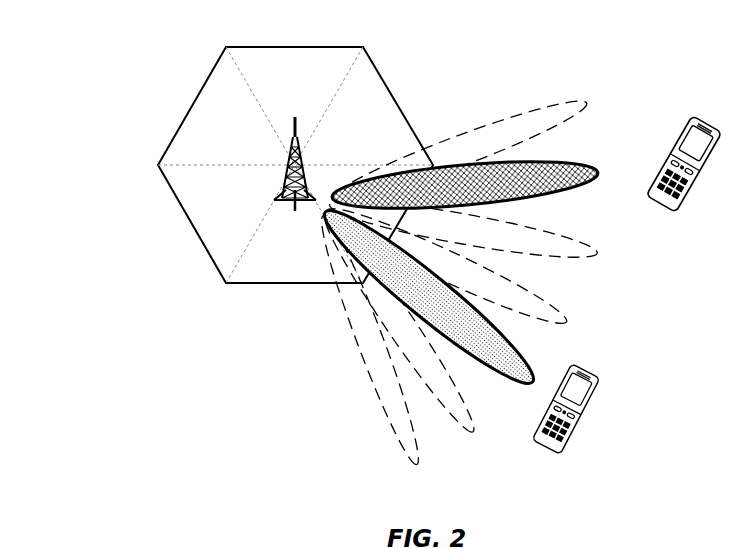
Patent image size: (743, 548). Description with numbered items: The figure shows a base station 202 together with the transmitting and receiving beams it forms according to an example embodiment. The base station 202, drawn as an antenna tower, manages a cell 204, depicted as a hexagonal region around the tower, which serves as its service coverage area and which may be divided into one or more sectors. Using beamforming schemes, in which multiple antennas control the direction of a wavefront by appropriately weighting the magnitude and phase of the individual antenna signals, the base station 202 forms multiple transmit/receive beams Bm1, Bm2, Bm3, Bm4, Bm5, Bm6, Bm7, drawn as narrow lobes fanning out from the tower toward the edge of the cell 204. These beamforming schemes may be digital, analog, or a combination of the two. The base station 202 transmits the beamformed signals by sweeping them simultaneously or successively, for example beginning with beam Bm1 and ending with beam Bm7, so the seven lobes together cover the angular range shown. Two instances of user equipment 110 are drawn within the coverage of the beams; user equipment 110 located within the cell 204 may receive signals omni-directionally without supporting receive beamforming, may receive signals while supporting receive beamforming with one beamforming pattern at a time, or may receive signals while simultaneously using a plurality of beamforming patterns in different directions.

The cell 204 is at (266, 165).
The base station 202 is at (295, 172).
The user equipment 110 is at (621, 296).
The beam BM1 Bm1 is at (596, 102).
The beam BM2 Bm2 is at (606, 173).
The beam BM3 Bm3 is at (605, 251).
The beam BM4 Bm4 is at (567, 308).
The beam BM5 Bm5 is at (541, 377).
The beam BM6 Bm6 is at (493, 434).
The beam BM7 Bm7 is at (433, 466).